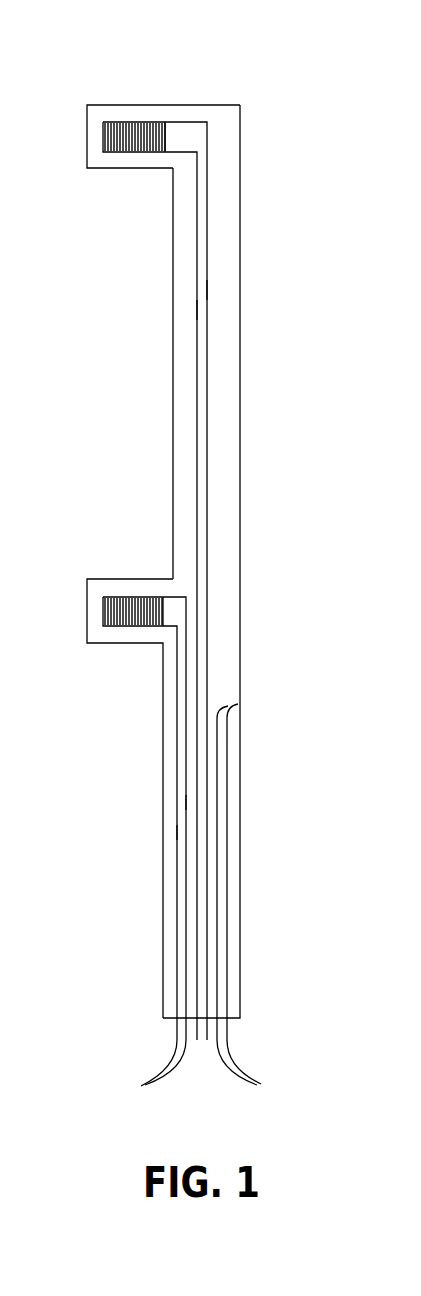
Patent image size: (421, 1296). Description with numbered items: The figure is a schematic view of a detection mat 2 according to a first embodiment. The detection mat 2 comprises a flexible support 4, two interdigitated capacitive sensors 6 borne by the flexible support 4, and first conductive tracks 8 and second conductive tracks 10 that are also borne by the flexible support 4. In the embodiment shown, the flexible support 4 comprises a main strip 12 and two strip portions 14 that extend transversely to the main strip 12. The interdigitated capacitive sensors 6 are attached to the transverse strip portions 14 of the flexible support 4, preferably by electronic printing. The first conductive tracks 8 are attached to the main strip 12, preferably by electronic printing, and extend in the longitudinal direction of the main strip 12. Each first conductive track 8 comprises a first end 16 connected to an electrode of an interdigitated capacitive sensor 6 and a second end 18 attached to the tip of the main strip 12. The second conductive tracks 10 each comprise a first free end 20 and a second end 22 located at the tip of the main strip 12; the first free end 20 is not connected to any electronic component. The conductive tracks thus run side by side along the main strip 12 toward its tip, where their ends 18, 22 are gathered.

The detection mat 2 is at (180, 592).
The flexible support 4 is at (208, 520).
The interdigitated capacitive sensor 6 is at (108, 153).
The first conductive track 8 is at (197, 315).
The second conductive track 10 is at (273, 854).
The main strip 12 is at (241, 357).
The strip portion 14 is at (108, 104).
The first end 16 is at (166, 121).
The second end 18 is at (148, 1075).
The first free end 20 is at (228, 706).
The second end 22 is at (255, 1075).